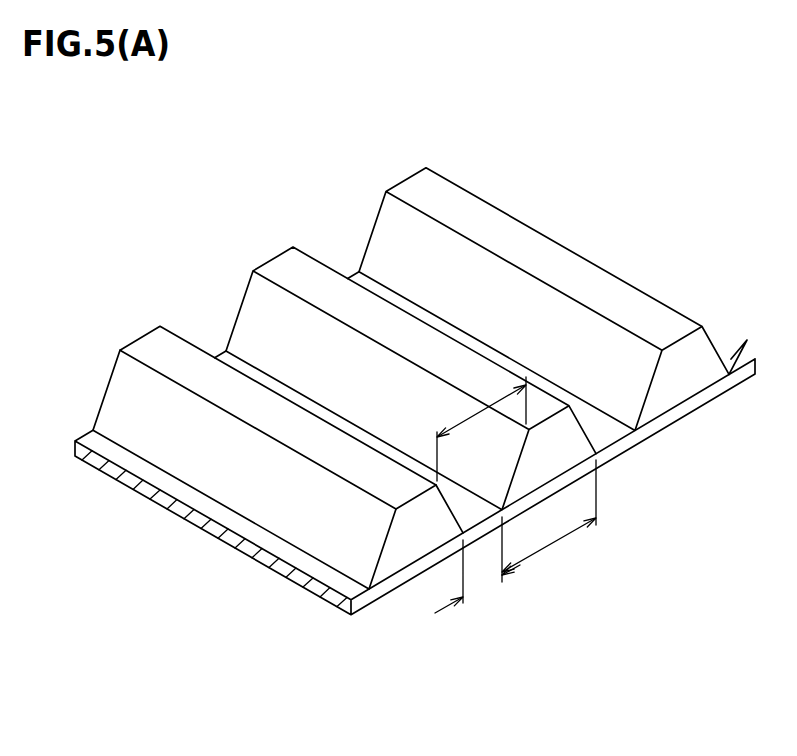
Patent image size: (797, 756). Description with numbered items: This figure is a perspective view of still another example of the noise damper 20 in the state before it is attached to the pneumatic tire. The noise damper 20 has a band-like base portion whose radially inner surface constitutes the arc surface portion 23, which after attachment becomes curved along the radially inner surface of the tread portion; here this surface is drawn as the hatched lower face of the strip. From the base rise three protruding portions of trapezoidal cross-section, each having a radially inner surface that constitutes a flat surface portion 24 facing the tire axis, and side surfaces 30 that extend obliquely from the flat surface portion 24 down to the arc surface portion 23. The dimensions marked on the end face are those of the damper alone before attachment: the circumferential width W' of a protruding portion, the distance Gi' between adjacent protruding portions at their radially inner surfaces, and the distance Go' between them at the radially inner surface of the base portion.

The noise damper 20 is at (390, 385).
The side surfaces 30 is at (377, 378).
The arc surface portion 23 is at (340, 583).
The flat surface portion 24 is at (153, 352).
The distance Gi' is at (558, 337).
The distance Go' is at (477, 583).
The circumferential width w' W' is at (549, 521).